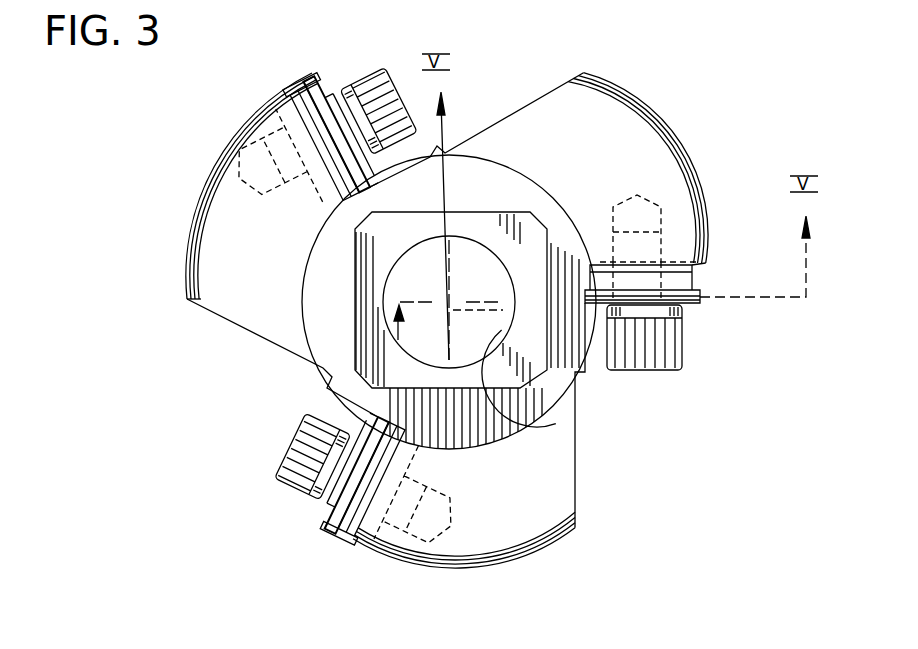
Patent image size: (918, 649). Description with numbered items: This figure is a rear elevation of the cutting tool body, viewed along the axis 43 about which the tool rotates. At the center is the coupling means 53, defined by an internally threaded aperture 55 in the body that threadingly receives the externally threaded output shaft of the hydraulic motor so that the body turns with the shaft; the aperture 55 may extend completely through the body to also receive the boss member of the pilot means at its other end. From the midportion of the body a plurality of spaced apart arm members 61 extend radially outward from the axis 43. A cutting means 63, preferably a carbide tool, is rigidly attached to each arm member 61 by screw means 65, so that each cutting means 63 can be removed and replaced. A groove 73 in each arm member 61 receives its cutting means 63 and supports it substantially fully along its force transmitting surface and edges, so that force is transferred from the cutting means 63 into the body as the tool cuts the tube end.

The axis 43 is at (451, 298).
The coupling means 53 is at (398, 322).
The internally threaded aperture 55 is at (556, 424).
The arm member 61 is at (210, 205).
The cutting means 63 is at (328, 100).
The screw means 65 is at (385, 70).
The groove 73 is at (312, 112).